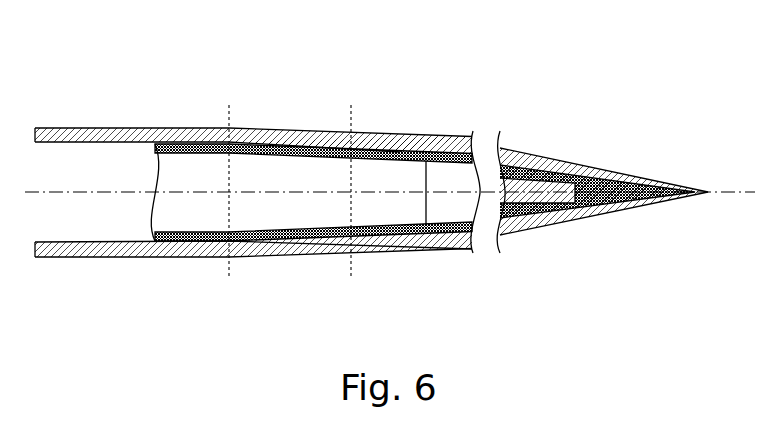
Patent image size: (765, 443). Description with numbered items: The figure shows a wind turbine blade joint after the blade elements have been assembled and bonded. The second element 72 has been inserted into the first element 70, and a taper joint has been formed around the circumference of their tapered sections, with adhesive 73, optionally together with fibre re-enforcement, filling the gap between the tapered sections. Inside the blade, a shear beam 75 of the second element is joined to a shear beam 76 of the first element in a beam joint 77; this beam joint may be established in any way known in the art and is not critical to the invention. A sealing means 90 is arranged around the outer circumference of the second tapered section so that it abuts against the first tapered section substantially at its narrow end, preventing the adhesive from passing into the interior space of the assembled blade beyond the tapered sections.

The first element 70 is at (473, 112).
The second element 72 is at (113, 83).
The adhesive 73 is at (300, 131).
The shear beam of the second element 75 is at (200, 160).
The shear beam of the first element 76 is at (449, 177).
The beam joint 77 is at (400, 213).
The sealing means 90 is at (353, 151).